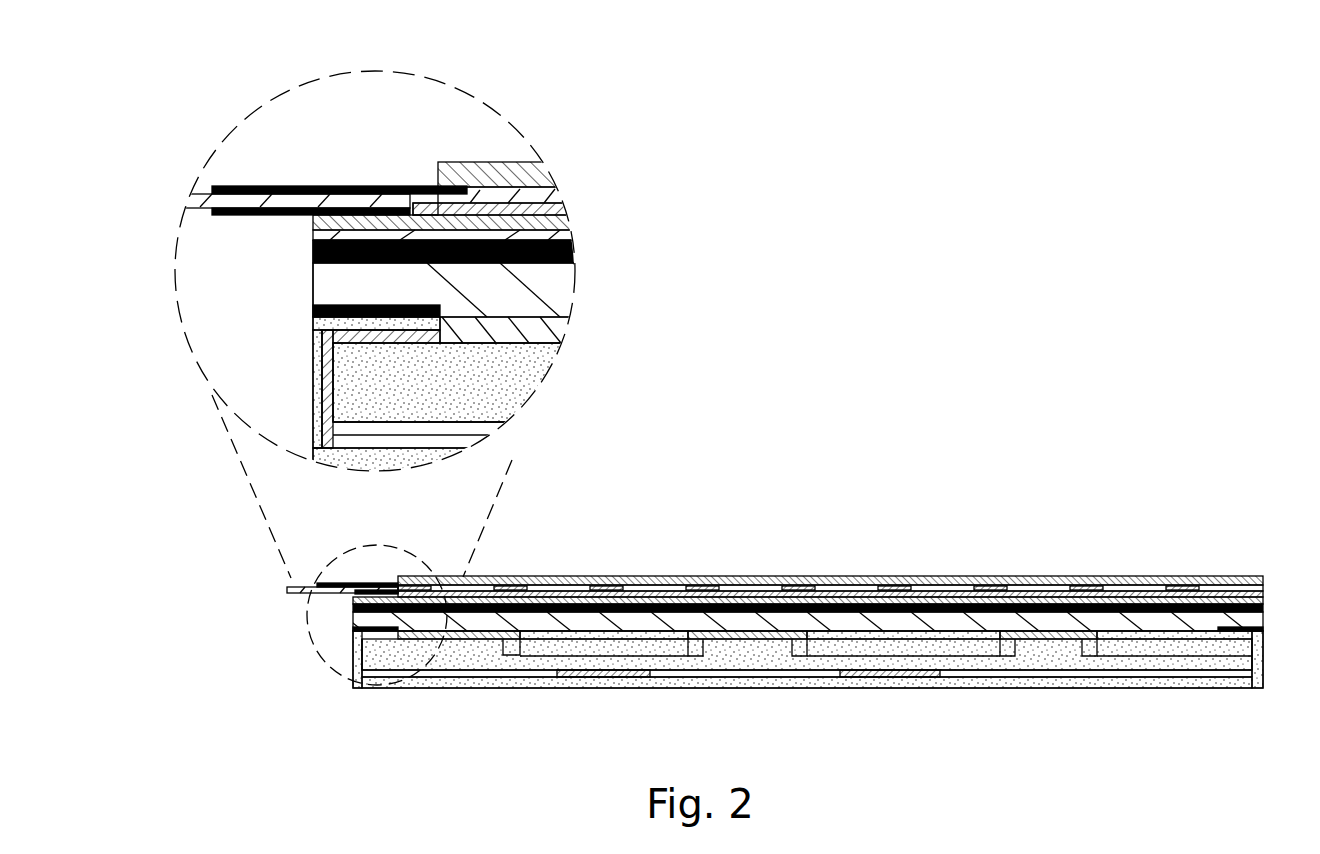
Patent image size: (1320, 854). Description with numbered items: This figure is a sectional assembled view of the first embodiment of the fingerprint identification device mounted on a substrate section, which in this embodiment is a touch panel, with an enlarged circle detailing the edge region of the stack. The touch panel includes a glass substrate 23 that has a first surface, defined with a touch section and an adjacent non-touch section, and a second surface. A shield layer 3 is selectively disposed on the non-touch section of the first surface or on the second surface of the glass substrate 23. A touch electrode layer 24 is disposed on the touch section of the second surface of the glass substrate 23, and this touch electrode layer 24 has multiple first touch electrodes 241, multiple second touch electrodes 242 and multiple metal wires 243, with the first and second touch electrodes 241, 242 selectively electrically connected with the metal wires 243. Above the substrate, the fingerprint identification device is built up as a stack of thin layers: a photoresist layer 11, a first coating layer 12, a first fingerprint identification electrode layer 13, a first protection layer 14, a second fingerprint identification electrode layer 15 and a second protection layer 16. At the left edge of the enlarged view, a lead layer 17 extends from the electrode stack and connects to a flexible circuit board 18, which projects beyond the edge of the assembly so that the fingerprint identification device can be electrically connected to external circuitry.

The photoresist layer 11 is at (577, 285).
The first coating layer 12 is at (577, 258).
The first fingerprint identification electrode layer 13 is at (560, 228).
The first protection layer 14 is at (573, 208).
The second fingerprint identification electrode layer 15 is at (560, 192).
The second protection layer 16 is at (543, 162).
The lead layer 17 is at (370, 187).
The flexible circuit board 18 is at (293, 187).
The shield layer 3 is at (355, 630).
The glass substrate 23 is at (1153, 625).
The touch electrode layer 24 is at (1035, 710).
The first touch electrodes 241 is at (1017, 655).
The second touch electrodes 242 is at (870, 677).
The metal wires 243 is at (353, 663).